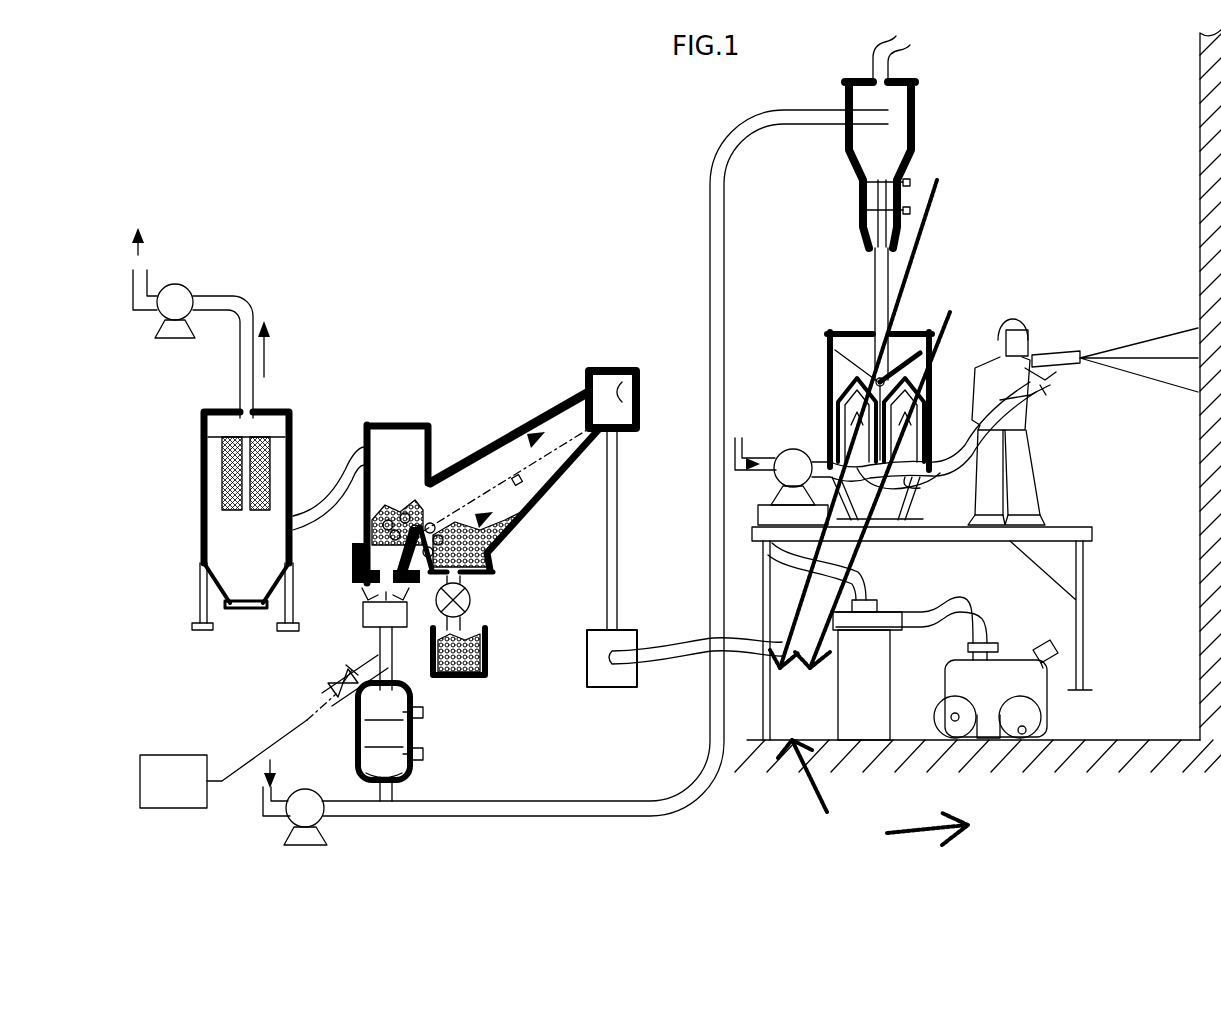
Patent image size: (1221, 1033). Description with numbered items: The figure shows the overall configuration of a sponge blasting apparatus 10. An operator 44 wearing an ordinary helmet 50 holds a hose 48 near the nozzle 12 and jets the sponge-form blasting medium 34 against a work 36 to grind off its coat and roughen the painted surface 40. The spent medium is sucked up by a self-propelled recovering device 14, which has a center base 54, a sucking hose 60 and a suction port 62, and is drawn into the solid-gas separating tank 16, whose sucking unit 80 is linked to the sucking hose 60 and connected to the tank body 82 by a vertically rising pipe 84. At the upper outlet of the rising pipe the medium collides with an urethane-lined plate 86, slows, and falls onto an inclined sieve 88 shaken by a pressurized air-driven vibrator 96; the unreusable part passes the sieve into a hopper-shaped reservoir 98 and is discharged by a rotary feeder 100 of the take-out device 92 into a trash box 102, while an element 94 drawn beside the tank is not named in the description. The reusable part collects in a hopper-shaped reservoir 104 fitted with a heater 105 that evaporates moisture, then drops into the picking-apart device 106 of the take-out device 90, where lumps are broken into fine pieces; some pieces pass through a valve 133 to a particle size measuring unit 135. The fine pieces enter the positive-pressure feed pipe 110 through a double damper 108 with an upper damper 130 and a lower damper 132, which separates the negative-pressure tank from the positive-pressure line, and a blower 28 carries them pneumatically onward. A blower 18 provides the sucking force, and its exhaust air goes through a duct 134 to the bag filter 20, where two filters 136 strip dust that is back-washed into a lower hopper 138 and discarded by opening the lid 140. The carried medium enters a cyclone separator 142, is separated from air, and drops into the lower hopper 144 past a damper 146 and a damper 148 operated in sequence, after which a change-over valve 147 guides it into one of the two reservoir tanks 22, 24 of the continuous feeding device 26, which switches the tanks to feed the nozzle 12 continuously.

The sponge blasting apparatus 10 is at (568, 172).
The nozzle 12 is at (1074, 352).
The self-propelled recovering device 14 is at (1014, 662).
The solid-gas separating tank 16 is at (526, 390).
The blower 18 is at (172, 300).
The bag filter 20 is at (296, 400).
The reservoir tank 22 is at (838, 440).
The reservoir tank 24 is at (933, 435).
The continuous feeding device 26 is at (828, 316).
The blower 28 is at (300, 790).
The blasting medium 34 is at (377, 528).
The work 36 is at (1200, 240).
The painted surface 40 is at (793, 452).
The operator 44 is at (1030, 314).
The hose 48 is at (933, 460).
The helmet 50 is at (850, 697).
The center base 54 is at (810, 723).
The sucking hose 60 is at (938, 622).
The suction port 62 is at (990, 740).
The sucking unit 80 is at (638, 648).
The tank body 82 is at (493, 440).
The vertically rising pipe 84 is at (620, 543).
The urethane-lined plate 86 is at (642, 390).
The sieve 88 is at (452, 517).
The take-out device 90 is at (340, 628).
The take-out device 92 is at (493, 632).
The recovery conduit 94 is at (556, 400).
The vibrator 96 is at (530, 496).
The hopper-shaped reservoir 98 is at (505, 556).
The rotary feeder 100 is at (472, 600).
The trash box 102 is at (488, 654).
The hopper-shaped reservoir 104 is at (366, 538).
The heater 105 is at (356, 583).
The picking-apart device 106 is at (412, 604).
The double damper 108 is at (428, 736).
The positive-pressure feed pipe 110 is at (546, 800).
The upper damper 130 is at (362, 728).
The lower damper 132 is at (362, 768).
The valve 133 is at (345, 674).
The duct 134 is at (337, 492).
The particle size measuring unit 135 is at (178, 755).
The filter 136 is at (300, 478).
The lower hopper 138 is at (210, 592).
The lid 140 is at (248, 610).
The cyclone separator 142 is at (918, 120).
The lower hopper 144 is at (862, 198).
The damper 146 is at (888, 180).
The change-over valve 147 is at (850, 292).
The damper 148 is at (912, 212).